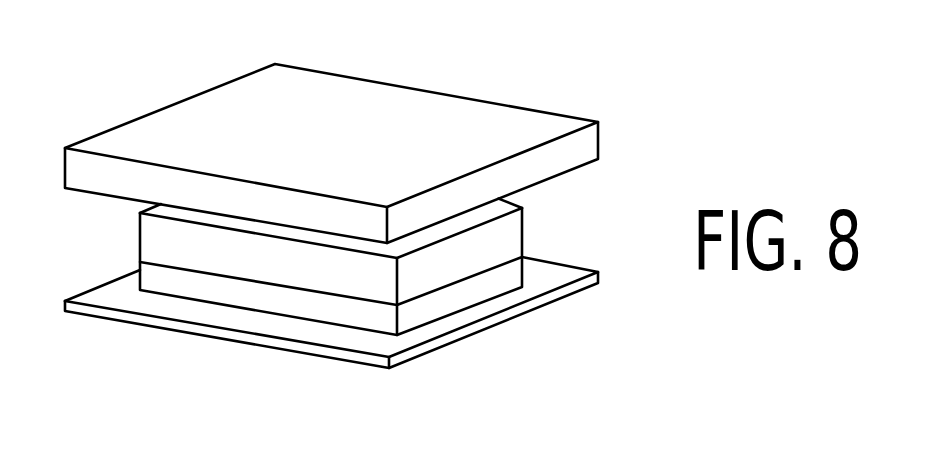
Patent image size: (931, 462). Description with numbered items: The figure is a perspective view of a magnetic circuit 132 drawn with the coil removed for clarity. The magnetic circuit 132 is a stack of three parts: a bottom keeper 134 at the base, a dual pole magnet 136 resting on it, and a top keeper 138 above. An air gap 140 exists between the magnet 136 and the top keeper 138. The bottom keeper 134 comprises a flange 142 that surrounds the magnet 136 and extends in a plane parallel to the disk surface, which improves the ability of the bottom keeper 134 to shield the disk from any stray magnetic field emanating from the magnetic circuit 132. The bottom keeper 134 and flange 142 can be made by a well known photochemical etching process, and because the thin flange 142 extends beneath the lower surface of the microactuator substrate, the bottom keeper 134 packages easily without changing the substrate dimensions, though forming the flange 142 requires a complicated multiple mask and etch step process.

The magnetic circuit 132 is at (103, 120).
The bottom keeper 134 is at (357, 312).
The dual pole magnet 136 is at (505, 238).
The top keeper 138 is at (488, 122).
The air gap 140 is at (567, 182).
The flange 142 is at (502, 315).